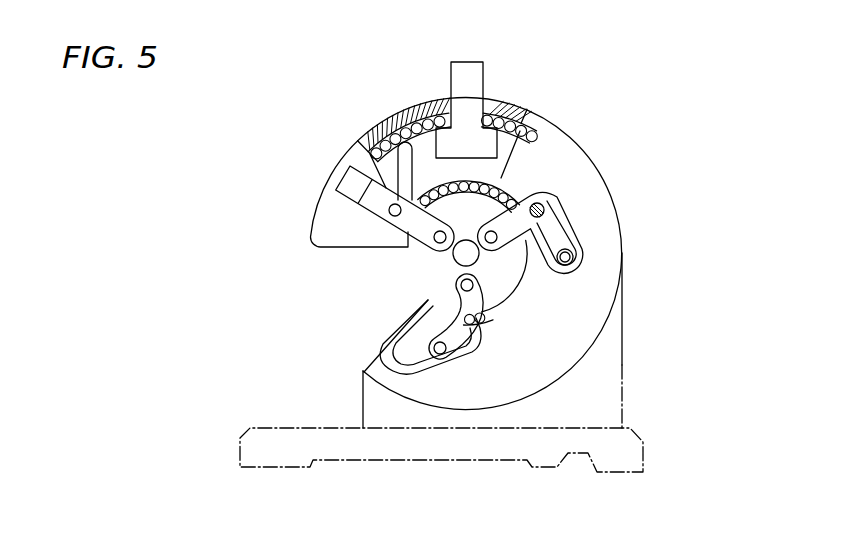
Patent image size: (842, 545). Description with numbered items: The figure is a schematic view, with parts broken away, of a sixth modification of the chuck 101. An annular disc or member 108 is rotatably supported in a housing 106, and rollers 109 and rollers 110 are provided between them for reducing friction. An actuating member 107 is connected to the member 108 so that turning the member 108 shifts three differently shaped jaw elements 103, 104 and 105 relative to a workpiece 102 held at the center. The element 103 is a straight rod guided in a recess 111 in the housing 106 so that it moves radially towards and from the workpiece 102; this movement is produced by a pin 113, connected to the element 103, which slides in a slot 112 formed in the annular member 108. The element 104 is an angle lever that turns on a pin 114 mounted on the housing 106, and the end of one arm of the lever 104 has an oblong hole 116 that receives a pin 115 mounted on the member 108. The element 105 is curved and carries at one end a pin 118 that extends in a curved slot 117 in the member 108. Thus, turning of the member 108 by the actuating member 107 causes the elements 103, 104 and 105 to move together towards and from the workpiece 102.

The chuck 101 is at (281, 139).
The workpiece 102 is at (460, 259).
The jaw element 103 is at (453, 257).
The jaw element 104 is at (547, 225).
The jaw element 105 is at (457, 337).
The housing 106 is at (322, 192).
The actuating member 107 is at (468, 100).
The annular member 108 is at (512, 140).
The rollers 109 is at (393, 113).
The rollers 110 is at (483, 178).
The recess 111 is at (405, 172).
The slot 112 is at (380, 142).
The pin 113 is at (413, 228).
The pin 114 is at (552, 203).
The pin 115 is at (573, 256).
The oblong hole 116 is at (577, 247).
The curved slot 117 is at (410, 358).
The pin 118 is at (441, 355).